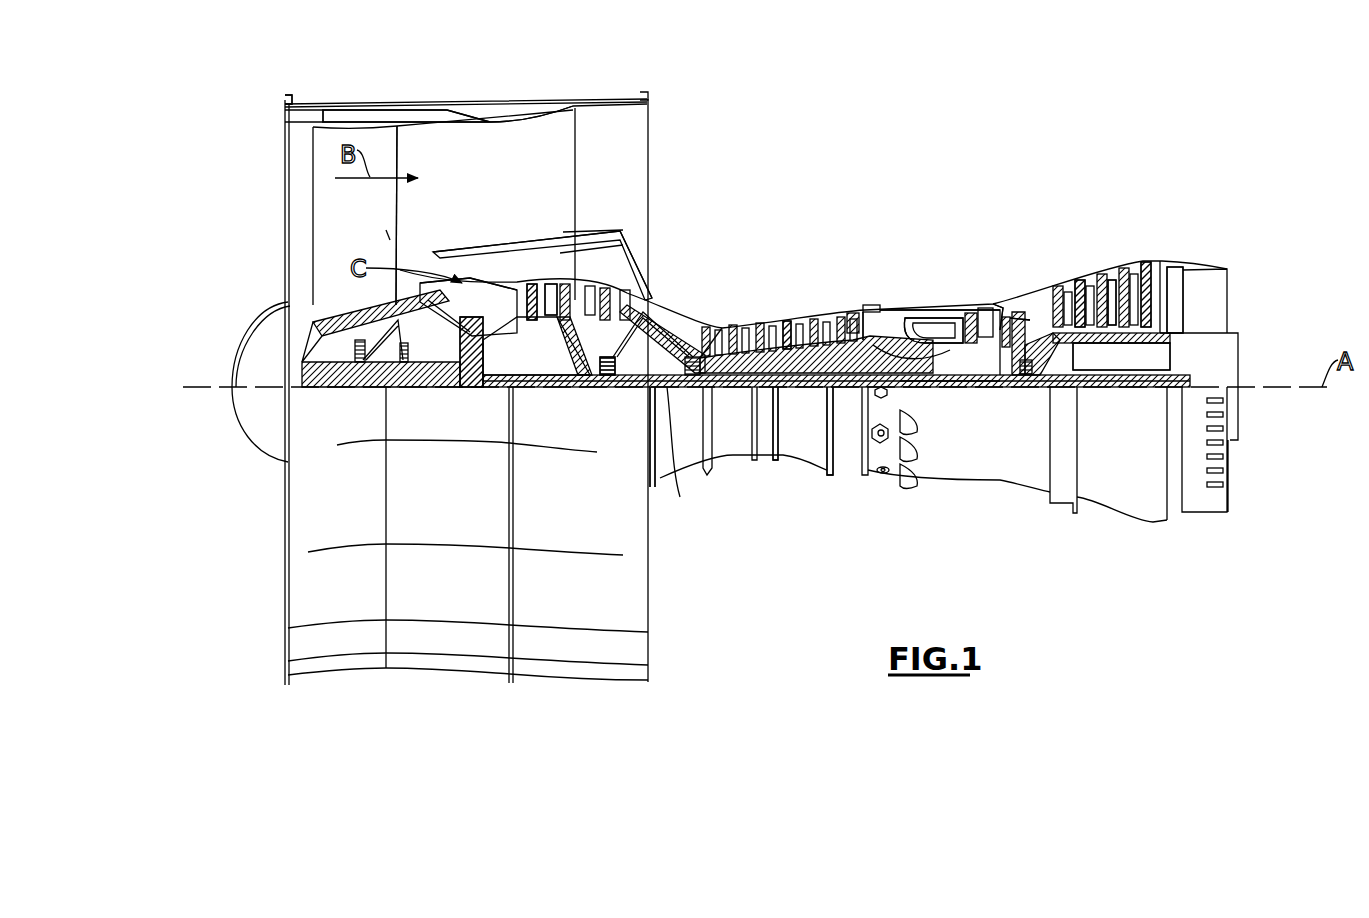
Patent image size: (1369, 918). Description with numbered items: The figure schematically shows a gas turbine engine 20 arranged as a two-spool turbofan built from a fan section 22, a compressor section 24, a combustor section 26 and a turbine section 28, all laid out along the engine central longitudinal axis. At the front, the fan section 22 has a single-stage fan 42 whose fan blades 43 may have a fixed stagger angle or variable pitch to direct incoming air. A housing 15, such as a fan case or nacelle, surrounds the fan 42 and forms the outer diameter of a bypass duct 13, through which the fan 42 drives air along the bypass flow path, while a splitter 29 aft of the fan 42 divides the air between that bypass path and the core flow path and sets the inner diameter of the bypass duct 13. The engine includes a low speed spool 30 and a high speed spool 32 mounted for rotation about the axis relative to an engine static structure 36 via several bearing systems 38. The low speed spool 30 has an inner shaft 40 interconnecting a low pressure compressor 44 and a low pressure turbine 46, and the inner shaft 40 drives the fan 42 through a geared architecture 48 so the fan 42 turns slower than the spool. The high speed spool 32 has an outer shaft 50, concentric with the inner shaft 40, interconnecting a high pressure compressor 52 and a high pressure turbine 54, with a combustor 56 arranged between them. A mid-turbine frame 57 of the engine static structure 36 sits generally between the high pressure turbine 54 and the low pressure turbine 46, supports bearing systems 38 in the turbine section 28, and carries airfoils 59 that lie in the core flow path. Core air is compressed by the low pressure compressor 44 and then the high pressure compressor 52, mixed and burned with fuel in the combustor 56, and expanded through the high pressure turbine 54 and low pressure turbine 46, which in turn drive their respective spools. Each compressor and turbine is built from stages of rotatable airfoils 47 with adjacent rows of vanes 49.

The gas turbine engine 20 is at (935, 148).
The fan section 22 is at (398, 84).
The housing 15 is at (470, 107).
The bypass duct 13 is at (512, 128).
The fan 42 is at (370, 233).
The fan blades 43 is at (386, 233).
The splitter 29 is at (443, 275).
The rotatable airfoils 47 is at (529, 282).
The vanes 49 is at (550, 287).
The low pressure compressor 44 is at (575, 292).
The compressor section 24 is at (702, 282).
The high pressure compressor 52 is at (787, 320).
The high speed spool 32 is at (849, 352).
The combustor section 26 is at (923, 273).
The combustor 56 is at (920, 328).
The high pressure turbine 54 is at (1003, 308).
The mid-turbine frame 57 is at (1033, 282).
The turbine section 28 is at (1075, 235).
The low pressure turbine 46 is at (1113, 277).
The airfoils 59 is at (1058, 350).
The geared architecture 48 is at (477, 370).
The bearing systems 38 is at (603, 387).
The inner shaft 40 is at (668, 390).
The low speed spool 30 is at (807, 410).
The engine static structure 36 is at (847, 490).
The outer shaft 50 is at (933, 380).